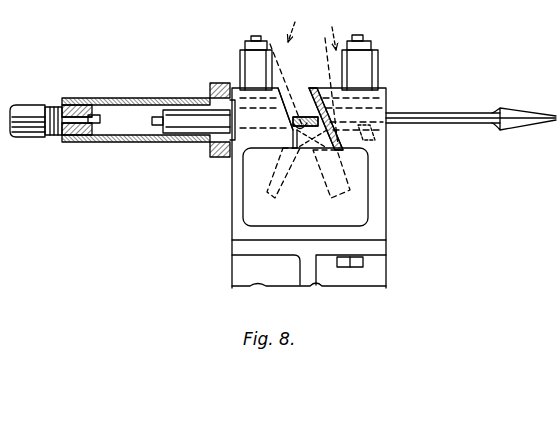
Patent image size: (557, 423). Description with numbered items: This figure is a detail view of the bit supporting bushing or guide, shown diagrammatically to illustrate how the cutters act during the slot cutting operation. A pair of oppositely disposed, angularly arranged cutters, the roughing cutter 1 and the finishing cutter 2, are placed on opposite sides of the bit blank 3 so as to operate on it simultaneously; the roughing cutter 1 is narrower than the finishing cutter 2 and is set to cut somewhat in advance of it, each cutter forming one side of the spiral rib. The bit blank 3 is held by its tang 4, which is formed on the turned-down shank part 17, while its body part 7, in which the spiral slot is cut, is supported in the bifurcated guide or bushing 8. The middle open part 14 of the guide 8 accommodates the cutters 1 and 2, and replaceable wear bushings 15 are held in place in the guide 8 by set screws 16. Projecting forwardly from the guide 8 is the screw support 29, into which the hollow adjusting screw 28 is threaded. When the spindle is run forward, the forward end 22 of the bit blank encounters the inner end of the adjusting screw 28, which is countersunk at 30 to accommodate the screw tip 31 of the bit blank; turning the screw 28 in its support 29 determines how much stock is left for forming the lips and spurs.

The roughing cutter 1 is at (335, 75).
The finishing cutter 2 is at (286, 64).
The bit blank 3 is at (374, 143).
The tang 4 is at (505, 110).
The body part 7 is at (197, 118).
The bifurcated guide or bushing 8 is at (256, 174).
The middle open part 14 is at (303, 103).
The replaceable wear bushings 15 is at (386, 90).
The set screws 16 is at (253, 40).
The shank part 17 is at (427, 112).
The forward end of the bit blank 22 is at (150, 112).
The hollow adjusting screw 28 is at (33, 114).
The screw support 29 is at (113, 143).
The countersink 30 is at (106, 103).
The screw tip 31 is at (158, 126).